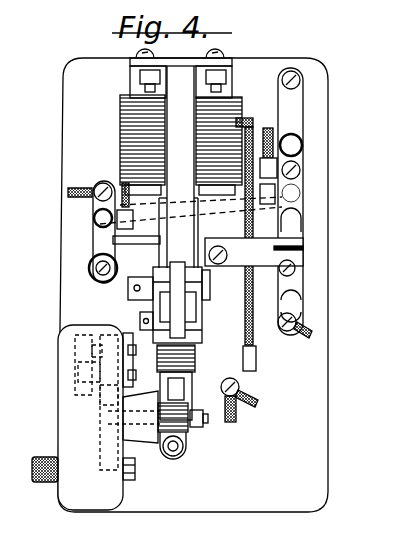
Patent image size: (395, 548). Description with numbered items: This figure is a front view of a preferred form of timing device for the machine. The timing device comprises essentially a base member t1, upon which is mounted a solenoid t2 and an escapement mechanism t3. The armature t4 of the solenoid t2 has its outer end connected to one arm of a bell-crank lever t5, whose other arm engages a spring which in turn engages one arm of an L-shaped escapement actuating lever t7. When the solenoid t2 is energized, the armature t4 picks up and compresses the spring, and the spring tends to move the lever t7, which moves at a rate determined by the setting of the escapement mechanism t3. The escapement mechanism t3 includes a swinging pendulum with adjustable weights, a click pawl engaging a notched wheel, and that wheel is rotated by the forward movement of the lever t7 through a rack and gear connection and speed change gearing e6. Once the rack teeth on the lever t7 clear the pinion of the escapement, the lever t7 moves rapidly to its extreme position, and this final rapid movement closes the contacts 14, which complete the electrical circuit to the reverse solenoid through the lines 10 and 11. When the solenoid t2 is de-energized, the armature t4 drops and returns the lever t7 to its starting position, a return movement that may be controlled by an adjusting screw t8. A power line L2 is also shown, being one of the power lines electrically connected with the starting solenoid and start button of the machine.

The base member t1 is at (328, 470).
The solenoid t2 is at (120, 123).
The escapement mechanism t3 is at (58, 397).
The armature t4 is at (178, 167).
The bell-crank lever t5 is at (200, 305).
The speed change gearing e6 is at (97, 397).
The L-shaped escapement actuating lever t7 is at (190, 368).
The adjusting screw t8 is at (185, 456).
The line 10 is at (125, 194).
The line 11 is at (305, 334).
The contacts 14 is at (282, 214).
The power line L2 is at (237, 420).